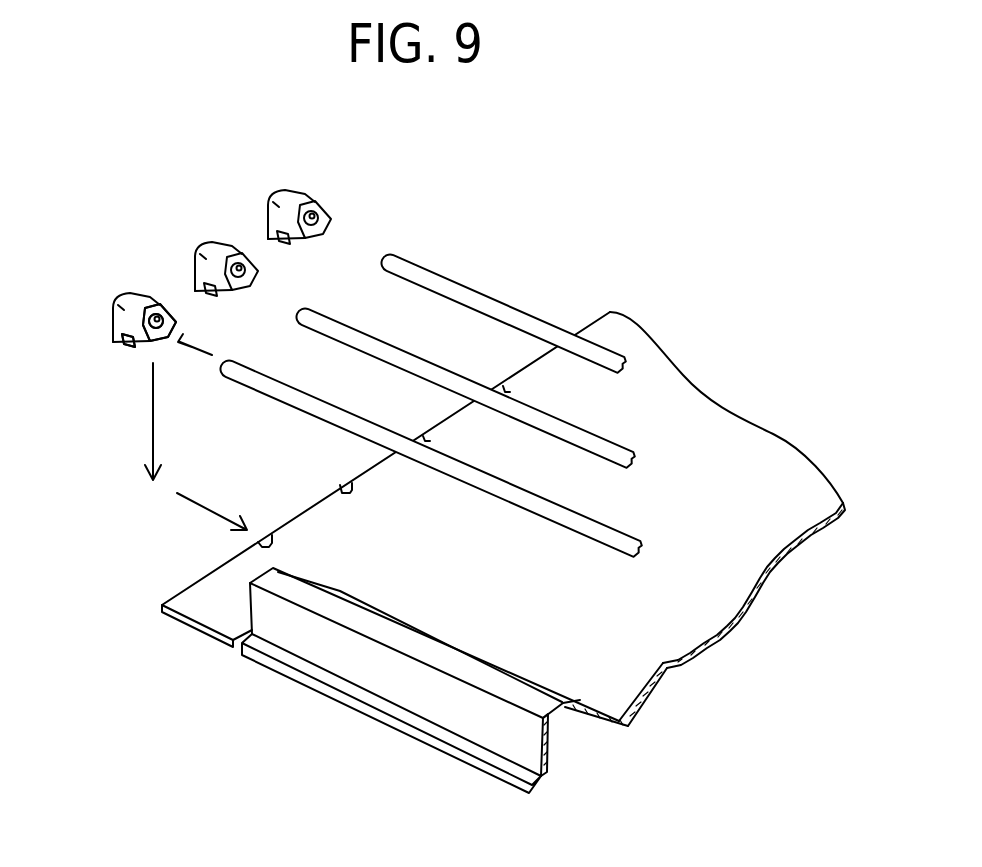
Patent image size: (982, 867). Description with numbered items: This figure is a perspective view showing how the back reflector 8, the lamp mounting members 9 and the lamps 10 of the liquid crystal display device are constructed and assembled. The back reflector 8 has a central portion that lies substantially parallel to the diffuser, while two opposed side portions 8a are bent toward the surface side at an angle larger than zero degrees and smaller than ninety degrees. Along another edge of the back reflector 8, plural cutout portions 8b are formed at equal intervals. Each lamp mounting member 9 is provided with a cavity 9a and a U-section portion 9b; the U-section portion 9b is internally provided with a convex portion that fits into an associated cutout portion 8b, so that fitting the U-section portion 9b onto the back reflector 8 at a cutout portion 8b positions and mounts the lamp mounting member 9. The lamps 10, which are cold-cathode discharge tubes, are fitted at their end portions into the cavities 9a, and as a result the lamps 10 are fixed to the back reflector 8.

The back reflector 8 is at (667, 370).
The side portion 8a is at (578, 703).
The cutout portion 8b is at (263, 531).
The lamp mounting member 9 is at (120, 310).
The cavity 9a is at (157, 320).
The U-section portion 9b is at (127, 345).
The lamp 10 is at (340, 412).